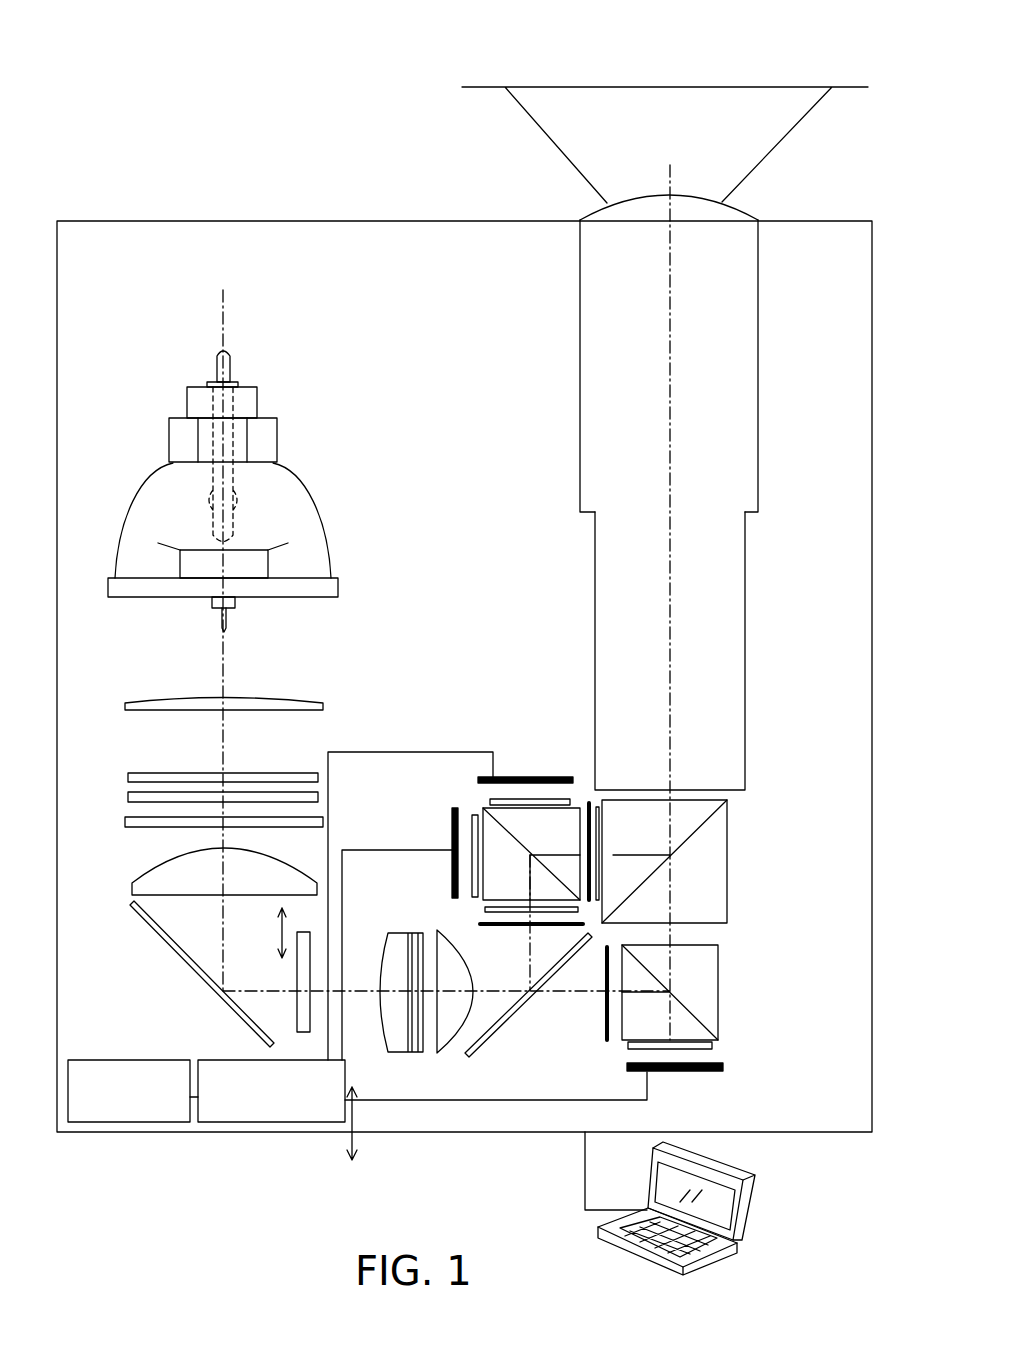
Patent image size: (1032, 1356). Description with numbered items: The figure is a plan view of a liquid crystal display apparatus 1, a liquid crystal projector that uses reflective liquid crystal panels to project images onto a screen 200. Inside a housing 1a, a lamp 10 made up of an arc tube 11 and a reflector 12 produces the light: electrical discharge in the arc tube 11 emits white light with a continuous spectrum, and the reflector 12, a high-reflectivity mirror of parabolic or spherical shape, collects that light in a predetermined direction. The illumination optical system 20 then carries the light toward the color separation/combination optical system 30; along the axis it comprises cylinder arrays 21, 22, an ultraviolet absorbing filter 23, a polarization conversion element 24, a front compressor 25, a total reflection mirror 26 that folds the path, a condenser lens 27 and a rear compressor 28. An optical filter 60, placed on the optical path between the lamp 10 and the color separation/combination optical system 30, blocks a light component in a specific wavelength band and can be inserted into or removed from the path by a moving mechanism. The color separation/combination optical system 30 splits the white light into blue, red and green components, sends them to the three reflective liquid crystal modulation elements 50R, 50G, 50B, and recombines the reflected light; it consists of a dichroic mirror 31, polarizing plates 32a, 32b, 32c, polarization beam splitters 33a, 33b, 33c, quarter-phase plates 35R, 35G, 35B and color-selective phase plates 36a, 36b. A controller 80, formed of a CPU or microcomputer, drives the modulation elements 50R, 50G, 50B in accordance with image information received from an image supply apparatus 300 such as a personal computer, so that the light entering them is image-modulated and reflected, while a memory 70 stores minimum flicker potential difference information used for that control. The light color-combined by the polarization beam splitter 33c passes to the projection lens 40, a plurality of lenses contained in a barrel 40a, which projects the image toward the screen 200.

The liquid crystal display apparatus 1 is at (239, 125).
The housing 1a is at (787, 219).
The lamp 10 is at (308, 478).
The arc tube 11 is at (210, 500).
The reflector 12 is at (323, 532).
The illumination optical system 20 is at (350, 707).
The cylinder array 21 is at (127, 697).
The cylinder array 22 is at (128, 797).
The ultraviolet absorbing filter 23 is at (128, 773).
The polarization conversion element 24 is at (125, 825).
The front compressor 25 is at (133, 887).
The total reflection mirror 26 is at (175, 948).
The condenser lens 27 is at (395, 1053).
The rear compressor 28 is at (440, 1055).
The color separation/combination optical system 30 is at (783, 875).
The dichroic mirror 31 is at (473, 1052).
The polarizing plate 32a is at (605, 1040).
The polarizing plate 32b is at (480, 924).
The polarizing plate 32c is at (590, 807).
The polarization beam splitter 33a is at (715, 1012).
The polarization beam splitter 33b is at (488, 813).
The polarization beam splitter 33c is at (723, 835).
The quarter-phase plate 35R is at (473, 813).
The quarter-phase plate 35B is at (487, 803).
The quarter-phase plate 35G is at (712, 1047).
The color-selective phase plate 36a is at (485, 909).
The color-selective phase plate 36b is at (597, 807).
The reflective liquid crystal modulation element 50R is at (452, 833).
The reflective liquid crystal modulation element 50B is at (517, 777).
The reflective liquid crystal modulation element 50G is at (688, 1073).
The projection lens 40 is at (730, 233).
The barrel 40a is at (727, 372).
The optical filter 60 is at (312, 1013).
The memory 70 is at (183, 1122).
The controller 80 is at (298, 1122).
The screen 200 is at (757, 87).
The image supply apparatus 300 is at (755, 1203).